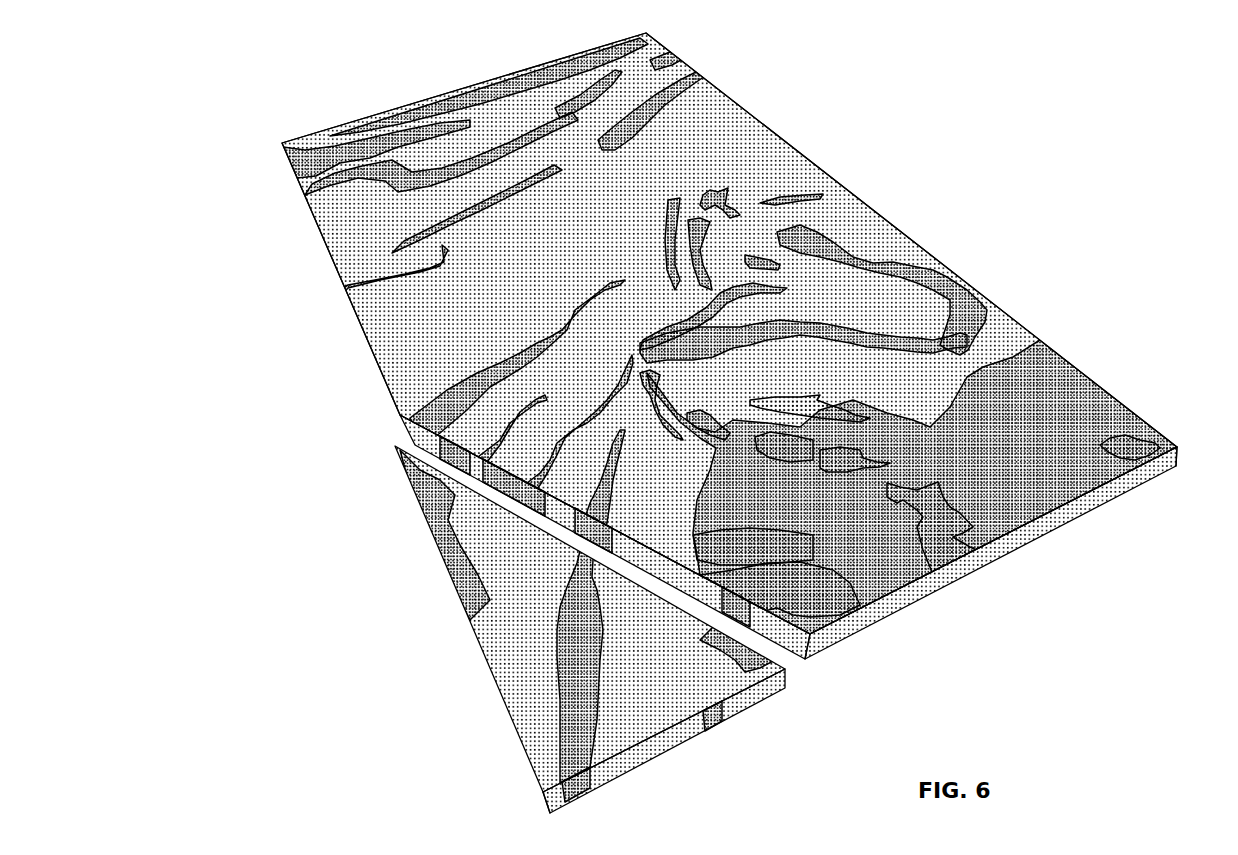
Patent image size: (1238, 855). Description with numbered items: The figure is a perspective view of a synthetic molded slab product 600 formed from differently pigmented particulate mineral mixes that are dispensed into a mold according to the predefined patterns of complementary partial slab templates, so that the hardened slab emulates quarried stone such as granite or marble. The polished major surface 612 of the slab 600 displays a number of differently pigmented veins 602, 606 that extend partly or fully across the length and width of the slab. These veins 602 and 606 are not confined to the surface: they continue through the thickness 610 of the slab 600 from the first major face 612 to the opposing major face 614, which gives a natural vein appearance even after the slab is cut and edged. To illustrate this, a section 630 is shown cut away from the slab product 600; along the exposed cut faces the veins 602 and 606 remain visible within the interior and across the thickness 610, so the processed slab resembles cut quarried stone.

The synthetic molded slab product 600 is at (722, 424).
The vein 602 is at (316, 146).
The vein 606 is at (300, 187).
The thickness 610 is at (1183, 447).
The major surface 612 is at (1130, 427).
The opposing major face 614 is at (1125, 500).
The section 630 is at (540, 817).